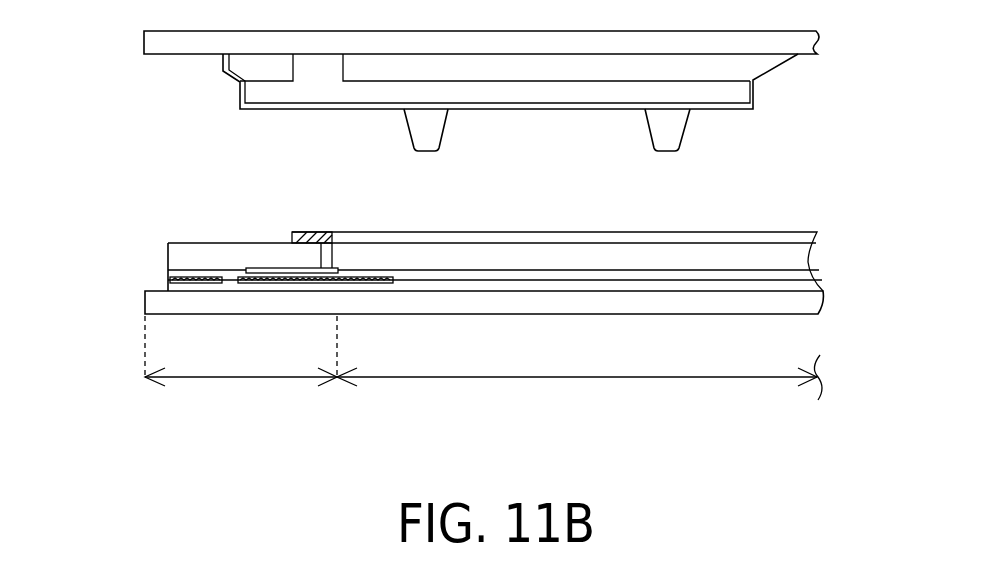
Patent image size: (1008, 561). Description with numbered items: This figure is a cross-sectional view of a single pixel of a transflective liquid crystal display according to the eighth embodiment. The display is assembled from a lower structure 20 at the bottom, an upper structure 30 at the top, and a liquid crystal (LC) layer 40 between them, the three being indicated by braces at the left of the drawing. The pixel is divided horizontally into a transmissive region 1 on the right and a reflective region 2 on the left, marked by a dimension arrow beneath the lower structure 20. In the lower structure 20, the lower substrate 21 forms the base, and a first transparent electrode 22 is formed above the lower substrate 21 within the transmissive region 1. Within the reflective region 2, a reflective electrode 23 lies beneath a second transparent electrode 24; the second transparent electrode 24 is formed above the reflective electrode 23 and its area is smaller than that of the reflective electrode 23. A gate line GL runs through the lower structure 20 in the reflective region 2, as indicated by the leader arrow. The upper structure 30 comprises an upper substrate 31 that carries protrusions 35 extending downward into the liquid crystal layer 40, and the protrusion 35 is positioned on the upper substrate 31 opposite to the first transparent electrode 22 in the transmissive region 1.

The upper structure 30 is at (86, 31).
The upper substrate 31 is at (817, 43).
The protrusion 35 is at (448, 126).
The liquid crystal (LC) layer 40 is at (86, 118).
The lower structure 20 is at (86, 240).
The lower substrate 21 is at (823, 301).
The first transparent electrode 22 is at (820, 236).
The reflective electrode 23 is at (257, 268).
The second transparent electrode 24 is at (302, 240).
The gate line GL is at (194, 277).
The transmissive region 1 is at (579, 384).
The reflective region 2 is at (251, 365).